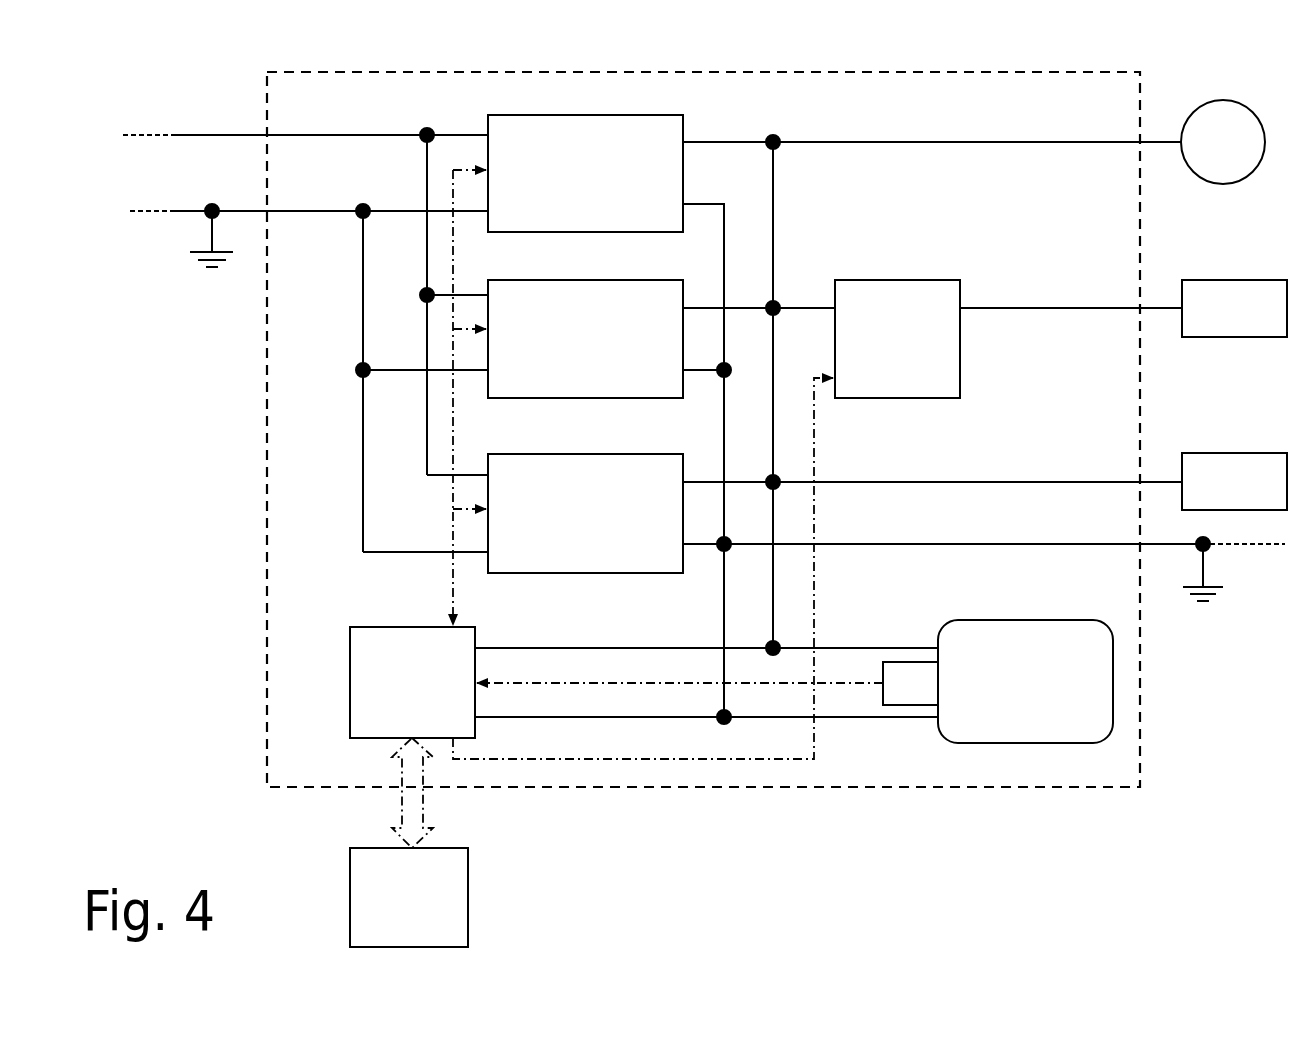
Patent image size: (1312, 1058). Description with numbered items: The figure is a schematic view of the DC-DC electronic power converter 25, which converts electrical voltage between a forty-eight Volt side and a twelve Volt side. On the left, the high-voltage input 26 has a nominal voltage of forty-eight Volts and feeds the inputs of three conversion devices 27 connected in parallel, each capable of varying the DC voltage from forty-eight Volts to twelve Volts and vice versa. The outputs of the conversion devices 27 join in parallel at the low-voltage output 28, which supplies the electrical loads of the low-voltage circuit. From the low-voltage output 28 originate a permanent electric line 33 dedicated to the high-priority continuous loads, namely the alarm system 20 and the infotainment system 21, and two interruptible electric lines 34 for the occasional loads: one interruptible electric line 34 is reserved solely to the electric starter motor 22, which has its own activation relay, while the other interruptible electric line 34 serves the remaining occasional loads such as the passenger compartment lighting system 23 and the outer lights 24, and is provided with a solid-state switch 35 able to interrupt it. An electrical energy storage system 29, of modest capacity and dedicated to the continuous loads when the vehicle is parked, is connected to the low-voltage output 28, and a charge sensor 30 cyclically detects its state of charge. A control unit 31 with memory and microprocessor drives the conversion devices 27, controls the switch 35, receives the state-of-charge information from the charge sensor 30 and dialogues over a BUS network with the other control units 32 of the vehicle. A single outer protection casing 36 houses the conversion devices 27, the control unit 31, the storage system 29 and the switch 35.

The alarm system 20 is at (1234, 481).
The infotainment system 21 is at (1234, 481).
The electric starter motor 22 is at (1223, 142).
The passenger compartment lighting system 23 is at (1234, 308).
The outer lights 24 is at (1234, 308).
The DC-DC electronic power converter 25 is at (1082, 871).
The high-voltage input 26 is at (383, 103).
The conversion device 27 is at (609, 419).
The low-voltage output 28 is at (745, 110).
The electrical energy storage system 29 is at (1025, 681).
The charge sensor 30 is at (910, 683).
The control unit 31 is at (644, 509).
The other control units 32 is at (409, 897).
The permanent electric line 33 is at (1077, 467).
The interruptible electric line 34 is at (1077, 132).
The switch 35 is at (897, 339).
The outer protection casing 36 is at (883, 787).